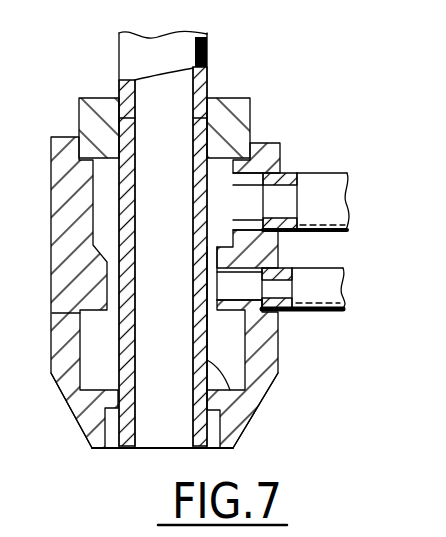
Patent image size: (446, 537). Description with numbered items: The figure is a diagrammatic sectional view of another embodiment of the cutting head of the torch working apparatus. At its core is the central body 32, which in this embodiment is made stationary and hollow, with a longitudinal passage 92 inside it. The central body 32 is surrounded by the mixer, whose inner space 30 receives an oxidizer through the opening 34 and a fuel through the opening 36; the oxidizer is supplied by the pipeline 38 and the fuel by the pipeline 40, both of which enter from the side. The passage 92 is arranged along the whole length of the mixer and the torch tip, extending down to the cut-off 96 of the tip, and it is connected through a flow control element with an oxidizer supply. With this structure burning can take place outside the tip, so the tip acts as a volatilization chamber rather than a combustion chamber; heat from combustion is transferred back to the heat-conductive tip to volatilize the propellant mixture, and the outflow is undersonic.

The inner space 30 is at (225, 342).
The central body 32 is at (250, 412).
The opening 34 is at (327, 180).
The opening 36 is at (247, 313).
The pipeline 38 is at (243, 197).
The pipeline 40 is at (338, 280).
The longitudinal passage 92 is at (165, 427).
The cut-off 96 is at (233, 448).